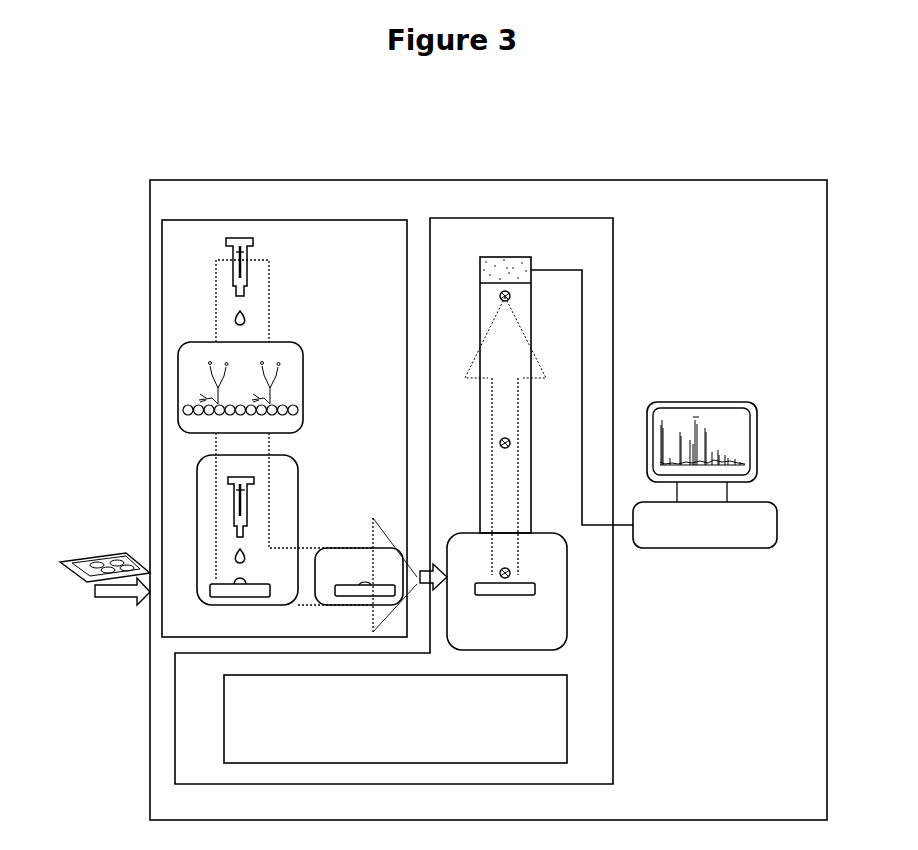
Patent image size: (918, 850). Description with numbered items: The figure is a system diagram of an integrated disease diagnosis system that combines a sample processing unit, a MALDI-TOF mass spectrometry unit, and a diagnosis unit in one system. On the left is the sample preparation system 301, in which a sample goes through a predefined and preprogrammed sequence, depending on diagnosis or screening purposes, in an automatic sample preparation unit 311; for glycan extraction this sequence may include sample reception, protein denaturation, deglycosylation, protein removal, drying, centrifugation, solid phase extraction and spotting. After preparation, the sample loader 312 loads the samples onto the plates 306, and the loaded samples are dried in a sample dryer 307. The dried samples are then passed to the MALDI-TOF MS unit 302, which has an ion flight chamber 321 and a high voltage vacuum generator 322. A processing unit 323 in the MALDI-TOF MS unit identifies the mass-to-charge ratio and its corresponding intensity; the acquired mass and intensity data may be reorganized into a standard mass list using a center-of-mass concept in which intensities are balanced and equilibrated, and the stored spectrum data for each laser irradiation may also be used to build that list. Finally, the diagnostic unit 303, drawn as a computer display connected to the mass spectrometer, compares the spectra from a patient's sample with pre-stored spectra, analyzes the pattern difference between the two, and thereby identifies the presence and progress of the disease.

The sample preparation system 301 is at (162, 250).
The MALDI-TOF MS unit 302 is at (615, 676).
The diagnostic unit 303 is at (700, 400).
The plates 306 is at (70, 566).
The sample dryer 307 is at (335, 560).
The automatic sample preparation unit 311 is at (178, 392).
The sample loader 312 is at (197, 512).
The ion flight chamber 321 is at (567, 601).
The high voltage vacuum generator 322 is at (567, 717).
The processing unit 323 is at (531, 263).